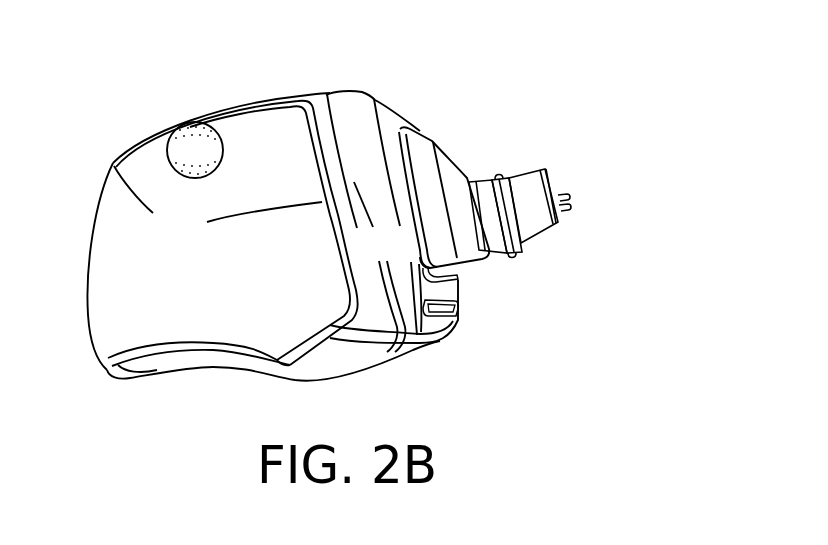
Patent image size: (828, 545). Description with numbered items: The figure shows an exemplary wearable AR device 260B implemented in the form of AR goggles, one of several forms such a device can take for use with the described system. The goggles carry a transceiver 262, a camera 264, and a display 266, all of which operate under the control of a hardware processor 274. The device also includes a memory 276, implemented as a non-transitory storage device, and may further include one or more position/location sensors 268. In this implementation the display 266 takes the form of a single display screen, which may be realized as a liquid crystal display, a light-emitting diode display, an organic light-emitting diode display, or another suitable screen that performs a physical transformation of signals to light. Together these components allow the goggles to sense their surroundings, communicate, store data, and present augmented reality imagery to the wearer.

The wearable AR device 260B is at (576, 79).
The transceiver 262 is at (347, 173).
The camera 264 is at (176, 160).
The display 266 is at (161, 237).
The position/location sensor 268 is at (365, 256).
The hardware processor 274 is at (459, 281).
The memory 276 is at (459, 310).